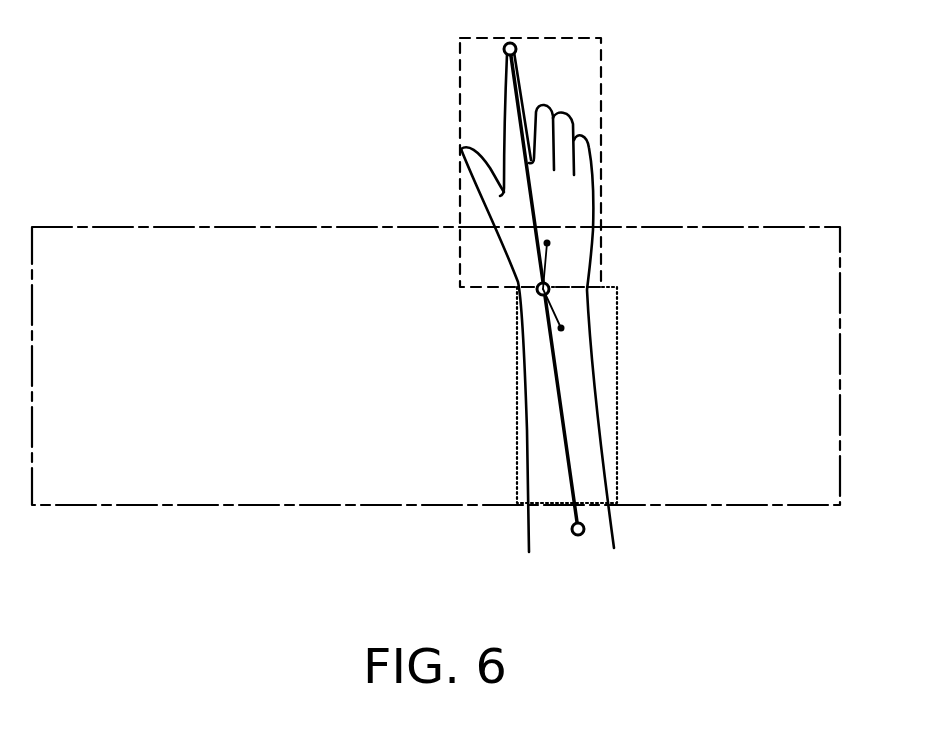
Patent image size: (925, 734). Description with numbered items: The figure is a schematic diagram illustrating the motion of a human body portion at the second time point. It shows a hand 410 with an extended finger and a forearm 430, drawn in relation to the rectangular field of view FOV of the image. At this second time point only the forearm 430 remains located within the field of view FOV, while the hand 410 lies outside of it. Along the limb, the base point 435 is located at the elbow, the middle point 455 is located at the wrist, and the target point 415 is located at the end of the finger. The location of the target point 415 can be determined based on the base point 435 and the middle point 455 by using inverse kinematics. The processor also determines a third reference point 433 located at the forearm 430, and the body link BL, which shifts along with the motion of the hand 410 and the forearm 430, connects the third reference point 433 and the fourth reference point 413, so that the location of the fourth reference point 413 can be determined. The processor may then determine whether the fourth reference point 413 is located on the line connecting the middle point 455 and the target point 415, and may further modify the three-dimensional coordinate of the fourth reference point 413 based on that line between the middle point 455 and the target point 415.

The field of view FOV is at (762, 226).
The hand 410 is at (604, 46).
The fourth reference point 413 is at (551, 243).
The target point 415 is at (504, 50).
The forearm 430 is at (512, 367).
The third reference point 433 is at (564, 329).
The base point 435 is at (581, 535).
The middle point 455 is at (536, 297).
The body link BL is at (553, 264).